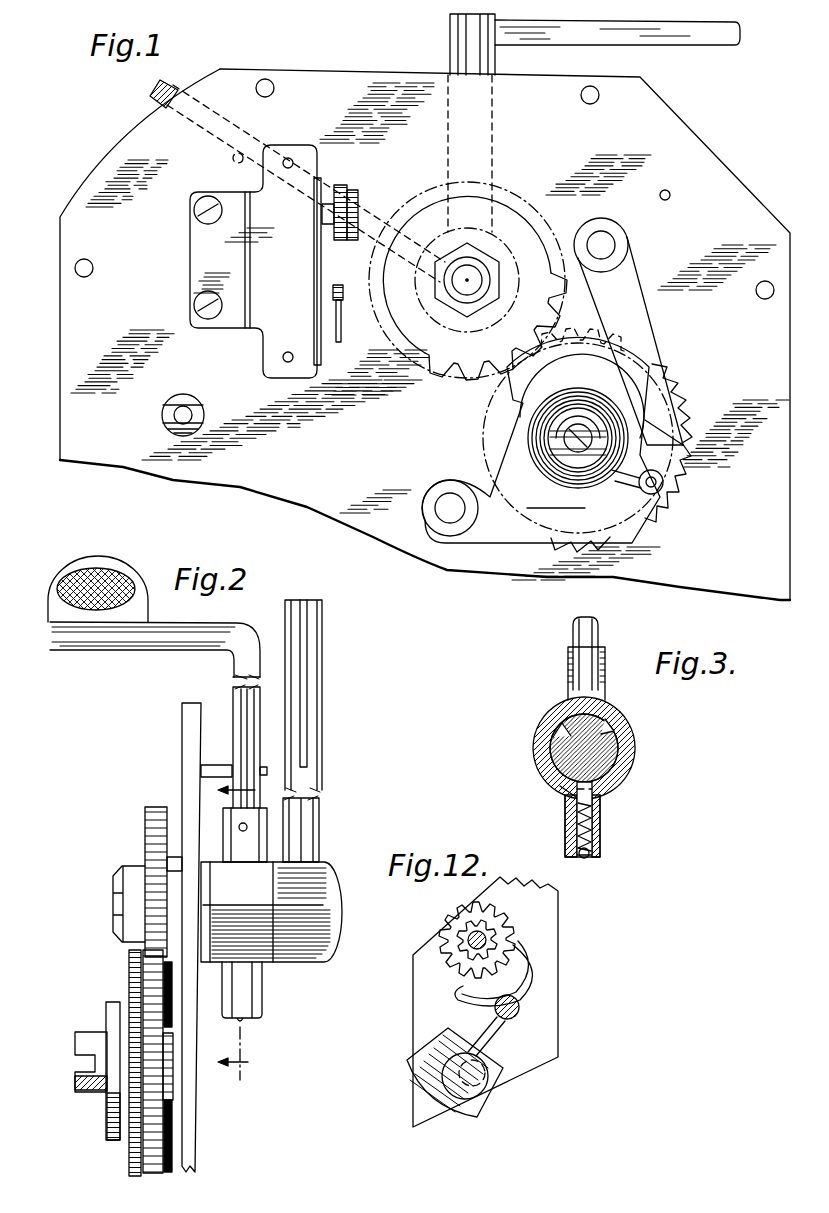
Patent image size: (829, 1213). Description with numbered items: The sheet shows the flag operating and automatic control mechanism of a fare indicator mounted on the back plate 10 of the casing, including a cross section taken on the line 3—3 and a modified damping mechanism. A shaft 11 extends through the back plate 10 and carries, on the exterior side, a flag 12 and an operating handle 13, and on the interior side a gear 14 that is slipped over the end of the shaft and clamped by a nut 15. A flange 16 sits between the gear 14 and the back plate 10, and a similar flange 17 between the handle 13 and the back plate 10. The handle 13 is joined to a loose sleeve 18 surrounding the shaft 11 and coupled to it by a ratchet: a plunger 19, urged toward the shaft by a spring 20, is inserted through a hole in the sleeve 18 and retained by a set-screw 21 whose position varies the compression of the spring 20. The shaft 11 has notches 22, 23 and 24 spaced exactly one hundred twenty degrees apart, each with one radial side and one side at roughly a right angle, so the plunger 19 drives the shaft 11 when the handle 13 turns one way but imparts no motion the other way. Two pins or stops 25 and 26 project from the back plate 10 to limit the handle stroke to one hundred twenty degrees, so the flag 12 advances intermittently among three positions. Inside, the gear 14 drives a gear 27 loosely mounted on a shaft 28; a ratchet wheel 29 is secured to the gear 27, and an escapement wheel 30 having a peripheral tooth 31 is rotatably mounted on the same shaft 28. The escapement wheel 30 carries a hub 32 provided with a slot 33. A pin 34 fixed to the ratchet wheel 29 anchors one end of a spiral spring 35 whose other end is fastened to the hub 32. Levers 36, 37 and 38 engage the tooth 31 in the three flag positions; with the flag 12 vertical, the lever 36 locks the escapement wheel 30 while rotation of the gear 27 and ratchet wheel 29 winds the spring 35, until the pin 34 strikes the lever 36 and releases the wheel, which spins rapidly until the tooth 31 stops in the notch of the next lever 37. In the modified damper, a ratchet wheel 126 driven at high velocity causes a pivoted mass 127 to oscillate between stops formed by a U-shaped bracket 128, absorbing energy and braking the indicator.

In FIG. 1, the back plate 10 is at (697, 138).
In FIG. 2, the back plate 10 is at (186, 713).
In FIG. 1, the shaft 11 is at (469, 278).
In FIG. 3, the shaft 11 is at (560, 752).
In FIG. 1, the flag 12 is at (643, 33).
In FIG. 2, the flag 12 is at (321, 621).
In FIG. 1, the operating handle 13 is at (177, 88).
In FIG. 2, the operating handle 13 is at (241, 640).
In FIG. 3, the operating handle 13 is at (600, 636).
In FIG. 1, the gear 14 is at (474, 360).
In FIG. 2, the gear 14 is at (155, 806).
In FIG. 1, the nut 15 is at (466, 312).
In FIG. 2, the nut 15 is at (130, 876).
In FIG. 2, the flange 16 is at (166, 858).
In FIG. 2, the flange 17 is at (202, 857).
In FIG. 2, the loose sleeve 18 is at (262, 944).
In FIG. 3, the loose sleeve 18 is at (634, 748).
In FIG. 3, the plunger 19 is at (596, 798).
In FIG. 3, the spring 20 is at (596, 833).
In FIG. 2, the set-screw 21 is at (245, 1021).
In FIG. 3, the set-screw 21 is at (600, 856).
In FIG. 2, the notch 22 is at (234, 758).
In FIG. 3, the notch 22 is at (558, 731).
In FIG. 3, the notch 23 is at (612, 731).
In FIG. 3, the notch 24 is at (563, 789).
In FIG. 1, the pin or stop 25 is at (232, 157).
In FIG. 1, the pin or stop 26 is at (672, 195).
In FIG. 1, the gear 27 is at (605, 343).
In FIG. 2, the gear 27 is at (147, 1012).
In FIG. 2, the shaft 28 is at (172, 1068).
In FIG. 1, the ratchet wheel 29 is at (692, 420).
In FIG. 2, the ratchet wheel 29 is at (130, 968).
In FIG. 1, the escapement wheel 30 is at (638, 462).
In FIG. 2, the escapement wheel 30 is at (112, 1007).
In FIG. 1, the tooth 31 is at (657, 407).
In FIG. 2, the tooth 31 is at (112, 1141).
In FIG. 1, the hub portion 32 is at (585, 415).
In FIG. 2, the hub portion 32 is at (92, 1092).
In FIG. 1, the slot 33 is at (555, 439).
In FIG. 2, the slot 33 is at (79, 1056).
In FIG. 1, the pin 34 is at (660, 498).
In FIG. 1, the spiral spring 35 is at (566, 458).
In FIG. 1, the lever 36 is at (628, 266).
In FIG. 1, the lever 37 is at (452, 480).
In FIG. 1, the lever 38 is at (508, 545).
In FIG. 2, the section line 3 is at (247, 931).
In FIG. 12, the ratchet wheel 126 is at (505, 940).
In FIG. 12, the pivoted mass 127 is at (480, 1074).
In FIG. 12, the U-shaped bracket 128 is at (480, 1108).